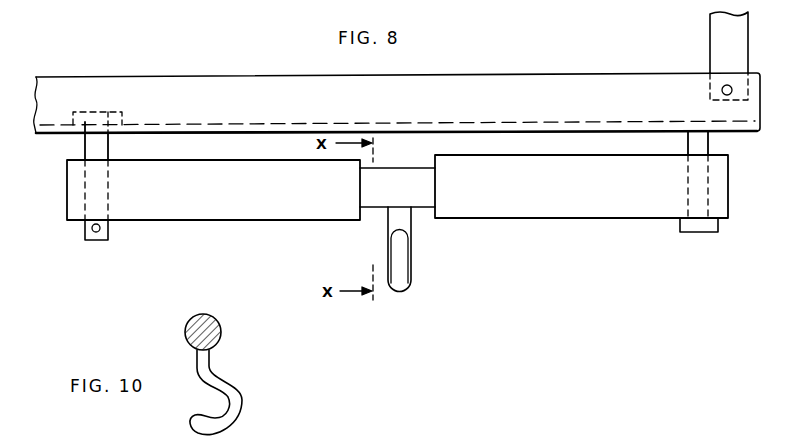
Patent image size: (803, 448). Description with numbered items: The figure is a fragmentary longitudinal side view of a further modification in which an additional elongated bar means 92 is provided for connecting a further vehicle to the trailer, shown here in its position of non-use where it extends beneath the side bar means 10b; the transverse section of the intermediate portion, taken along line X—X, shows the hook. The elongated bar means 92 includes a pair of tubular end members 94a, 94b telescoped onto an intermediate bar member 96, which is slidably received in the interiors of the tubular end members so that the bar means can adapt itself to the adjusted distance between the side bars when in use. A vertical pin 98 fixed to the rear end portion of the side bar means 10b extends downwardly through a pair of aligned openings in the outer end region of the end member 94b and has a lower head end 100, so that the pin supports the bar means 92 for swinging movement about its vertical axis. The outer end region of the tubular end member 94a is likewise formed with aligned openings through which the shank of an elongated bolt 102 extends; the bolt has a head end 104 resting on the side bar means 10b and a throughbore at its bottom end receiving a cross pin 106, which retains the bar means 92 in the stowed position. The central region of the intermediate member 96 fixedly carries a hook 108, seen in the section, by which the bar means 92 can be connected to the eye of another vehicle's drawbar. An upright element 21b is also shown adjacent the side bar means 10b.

In FIG. 8, the side bar means 10b is at (242, 76).
In FIG. 8, the upright post 21b is at (716, 33).
In FIG. 8, the head end 104 is at (97, 111).
In FIG. 8, the elongated bolt 102 is at (90, 146).
In FIG. 8, the cross pin 106 is at (85, 228).
In FIG. 8, the elongated bar means 92 is at (397, 203).
In FIG. 8, the tubular end member 94a is at (202, 210).
In FIG. 8, the tubular end member 94b is at (627, 205).
In FIG. 8, the intermediate bar member 96 is at (406, 177).
In FIG. 10, the intermediate bar member 96 is at (192, 328).
In FIG. 8, the hook 108 is at (413, 270).
In FIG. 10, the hook 108 is at (236, 405).
In FIG. 8, the vertical pin 98 is at (708, 144).
In FIG. 8, the lower head end 100 is at (720, 228).